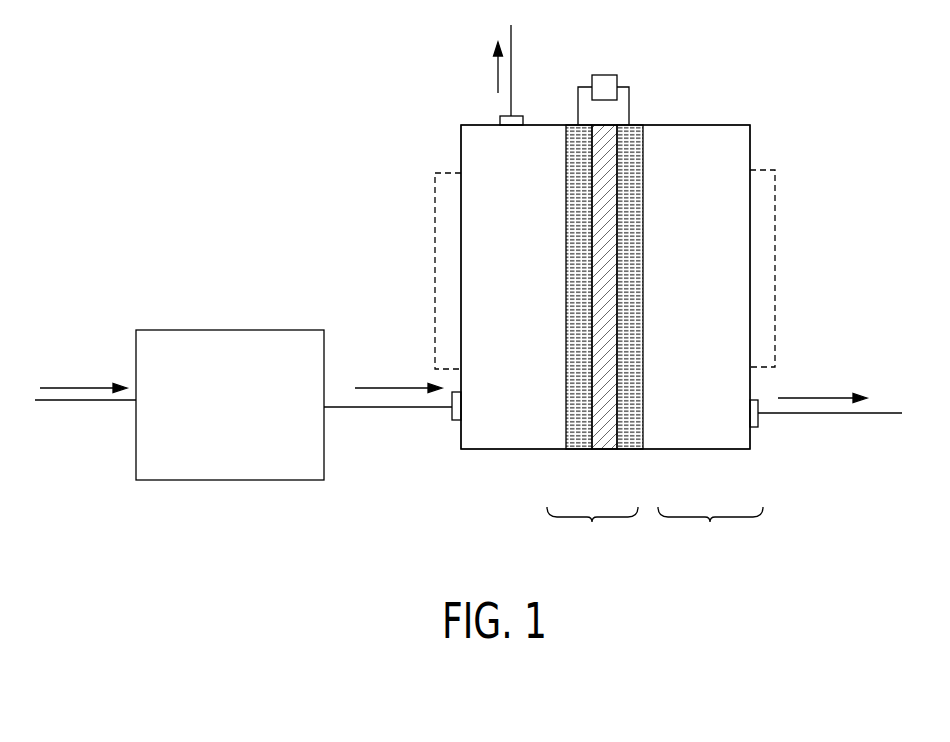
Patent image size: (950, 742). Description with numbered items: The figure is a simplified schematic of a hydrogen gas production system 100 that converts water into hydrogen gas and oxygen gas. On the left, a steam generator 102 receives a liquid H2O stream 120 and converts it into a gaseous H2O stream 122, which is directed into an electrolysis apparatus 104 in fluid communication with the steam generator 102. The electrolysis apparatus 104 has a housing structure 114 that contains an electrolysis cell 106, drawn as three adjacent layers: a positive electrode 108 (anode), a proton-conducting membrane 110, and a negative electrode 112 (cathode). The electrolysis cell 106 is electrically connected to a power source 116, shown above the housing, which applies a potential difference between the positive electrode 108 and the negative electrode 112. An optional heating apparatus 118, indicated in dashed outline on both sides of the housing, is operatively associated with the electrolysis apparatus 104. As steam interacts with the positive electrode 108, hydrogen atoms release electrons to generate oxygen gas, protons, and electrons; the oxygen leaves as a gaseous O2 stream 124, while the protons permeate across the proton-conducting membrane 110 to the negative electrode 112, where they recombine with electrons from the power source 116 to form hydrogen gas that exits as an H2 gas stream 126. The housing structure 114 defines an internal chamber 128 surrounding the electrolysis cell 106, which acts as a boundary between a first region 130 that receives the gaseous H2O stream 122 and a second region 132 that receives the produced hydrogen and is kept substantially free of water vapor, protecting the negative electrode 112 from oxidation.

The hydrogen gas production system 100 is at (155, 148).
The steam generator 102 is at (217, 328).
The electrolysis apparatus 104 is at (733, 107).
The electrolysis cell 106 is at (592, 530).
The positive electrode 108 is at (573, 440).
The proton-conducting membrane 110 is at (605, 440).
The negative electrode 112 is at (636, 440).
The housing structure 114 is at (753, 148).
The power source 116 is at (605, 82).
The heating apparatus 118 is at (450, 240).
The liquid H2O stream 120 is at (80, 387).
The gaseous H2O stream 122 is at (390, 387).
The gaseous O2 stream 124 is at (497, 82).
The H2 gas stream 126 is at (815, 392).
The internal chamber 128 is at (710, 530).
The first region 130 is at (557, 195).
The second region 132 is at (734, 418).